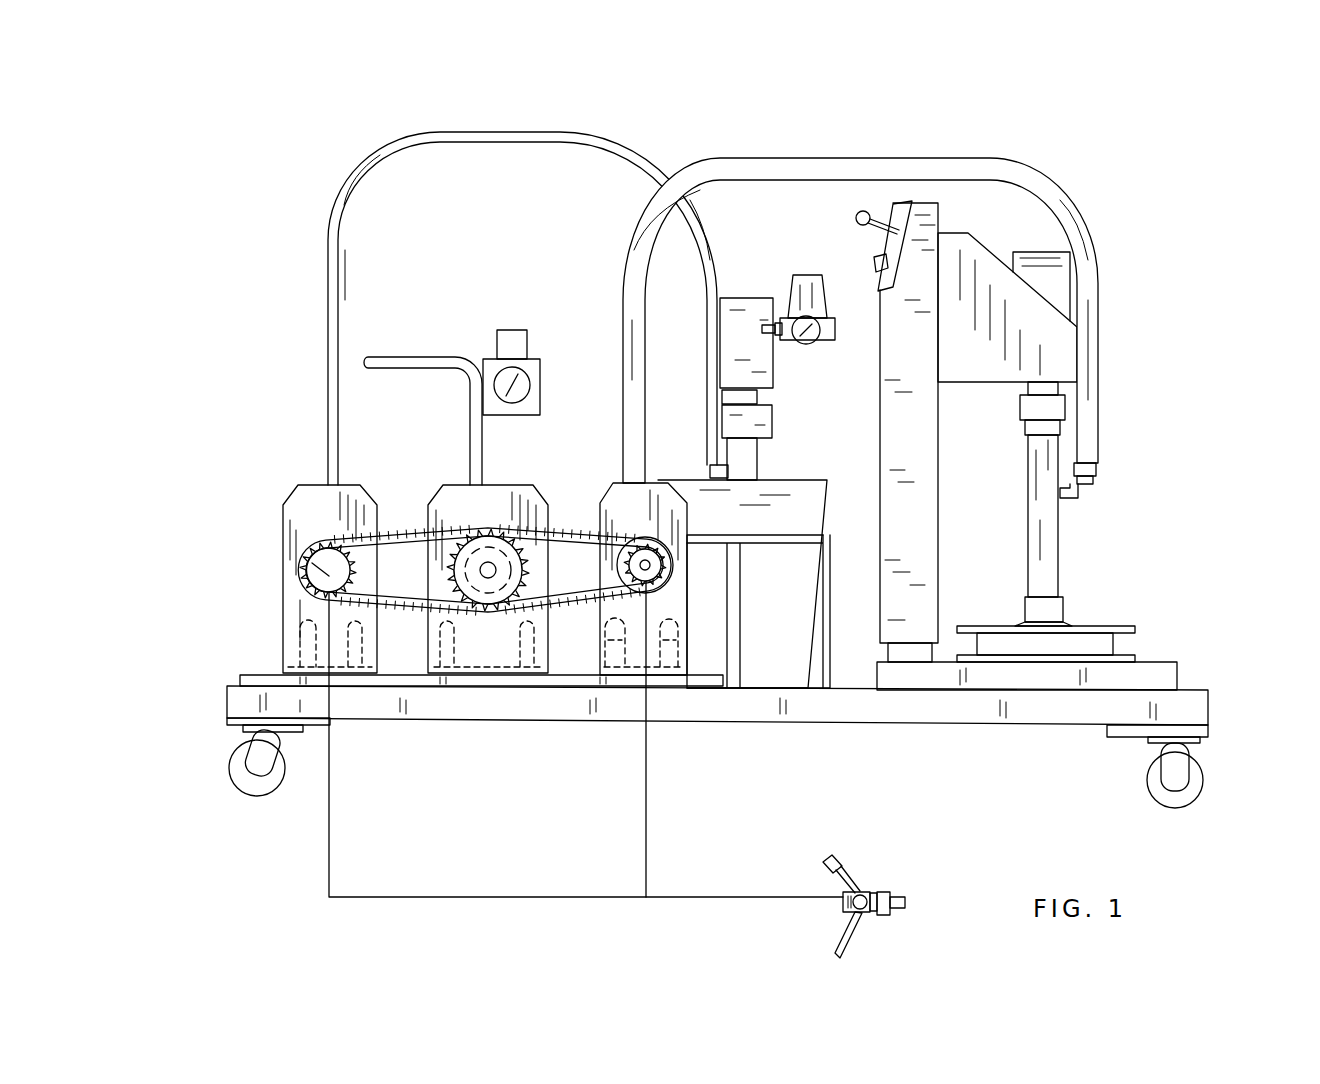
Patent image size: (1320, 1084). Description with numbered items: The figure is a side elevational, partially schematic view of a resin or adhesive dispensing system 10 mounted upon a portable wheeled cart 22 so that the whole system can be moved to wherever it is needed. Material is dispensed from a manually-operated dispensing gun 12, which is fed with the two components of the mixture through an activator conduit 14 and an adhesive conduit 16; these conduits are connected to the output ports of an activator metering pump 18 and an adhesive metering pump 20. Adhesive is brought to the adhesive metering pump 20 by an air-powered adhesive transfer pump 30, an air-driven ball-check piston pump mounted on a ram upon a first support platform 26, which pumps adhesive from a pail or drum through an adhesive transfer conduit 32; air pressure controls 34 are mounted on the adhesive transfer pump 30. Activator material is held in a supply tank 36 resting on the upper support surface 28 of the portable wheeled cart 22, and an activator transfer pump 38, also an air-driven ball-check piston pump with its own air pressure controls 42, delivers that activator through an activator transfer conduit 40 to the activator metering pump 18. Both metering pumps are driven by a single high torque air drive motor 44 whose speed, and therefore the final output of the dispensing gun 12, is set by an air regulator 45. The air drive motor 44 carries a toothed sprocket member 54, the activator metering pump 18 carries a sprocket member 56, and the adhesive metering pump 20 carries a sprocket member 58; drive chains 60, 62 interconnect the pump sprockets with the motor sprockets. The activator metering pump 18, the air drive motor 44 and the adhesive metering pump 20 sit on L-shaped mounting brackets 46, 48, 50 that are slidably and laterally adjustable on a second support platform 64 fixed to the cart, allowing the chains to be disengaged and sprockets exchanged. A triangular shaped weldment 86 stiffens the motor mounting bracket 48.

The resin or adhesive dispensing system 10 is at (1175, 330).
The dispensing gun 12 is at (897, 893).
The activator conduit 14 is at (330, 835).
The adhesive conduit 16 is at (648, 815).
The activator metering pump 18 is at (326, 573).
The adhesive metering pump 20 is at (668, 590).
The portable wheeled cart 22 is at (1210, 725).
The first support platform 26 is at (1160, 678).
The upper support surface 28 is at (1200, 688).
The adhesive transfer pump 30 is at (1095, 627).
The adhesive transfer conduit 32 is at (1027, 182).
The air pressure controls 34 is at (900, 345).
The supply tank 36 is at (807, 507).
The activator transfer pump 38 is at (742, 298).
The activator transfer conduit 40 is at (637, 138).
The air pressure controls 42 is at (820, 305).
The air drive motor 44 is at (490, 560).
The air regulator 45 is at (528, 345).
The mounting bracket 46 is at (293, 512).
The mounting bracket 48 is at (460, 500).
The mounting bracket 50 is at (652, 505).
The sprocket member 54 is at (527, 622).
The sprocket member 56 is at (318, 595).
The sprocket member 58 is at (665, 540).
The drive chain 60 is at (393, 540).
The drive chain 62 is at (578, 530).
The second support platform 64 is at (240, 677).
The triangular shaped weldment 86 is at (448, 652).